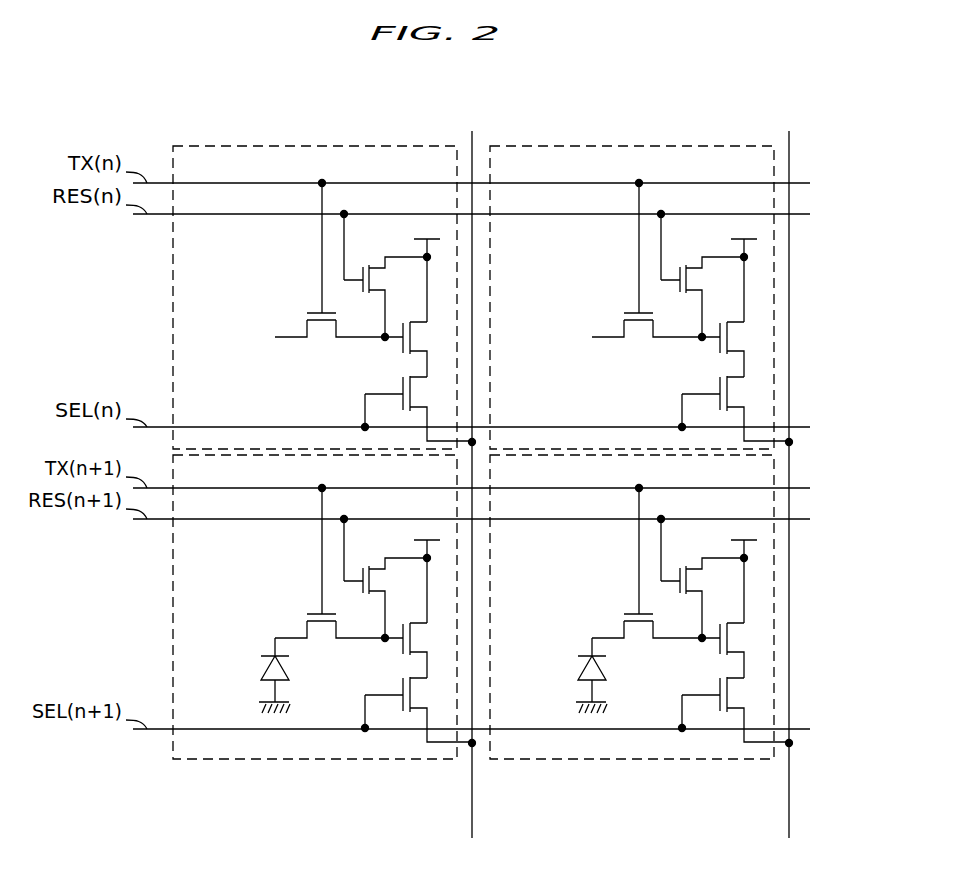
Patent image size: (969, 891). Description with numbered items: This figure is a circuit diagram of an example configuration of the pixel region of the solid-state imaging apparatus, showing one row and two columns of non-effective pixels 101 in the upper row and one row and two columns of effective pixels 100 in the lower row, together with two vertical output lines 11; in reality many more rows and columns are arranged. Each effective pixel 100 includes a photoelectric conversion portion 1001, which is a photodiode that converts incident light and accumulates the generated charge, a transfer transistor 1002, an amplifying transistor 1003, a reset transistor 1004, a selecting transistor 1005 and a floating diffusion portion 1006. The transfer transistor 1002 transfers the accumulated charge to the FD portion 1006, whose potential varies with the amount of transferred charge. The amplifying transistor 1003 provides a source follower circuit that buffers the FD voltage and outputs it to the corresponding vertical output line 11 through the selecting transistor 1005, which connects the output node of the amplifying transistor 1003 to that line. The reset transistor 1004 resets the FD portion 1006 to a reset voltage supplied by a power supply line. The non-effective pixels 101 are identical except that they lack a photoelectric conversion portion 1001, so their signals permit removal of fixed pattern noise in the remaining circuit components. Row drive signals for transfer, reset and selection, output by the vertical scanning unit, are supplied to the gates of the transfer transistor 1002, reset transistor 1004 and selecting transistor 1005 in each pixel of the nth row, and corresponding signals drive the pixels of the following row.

The vertical output line 11 is at (472, 810).
The effective pixel 100 is at (315, 765).
The non-effective pixel 101 is at (315, 146).
The photoelectric conversion portion 1001 is at (400, 675).
The transfer transistor 1002 is at (307, 313).
The amplifying transistor 1003 is at (404, 358).
The reset transistor 1004 is at (364, 268).
The selecting transistor 1005 is at (404, 411).
The floating diffusion portion 1006 is at (383, 340).